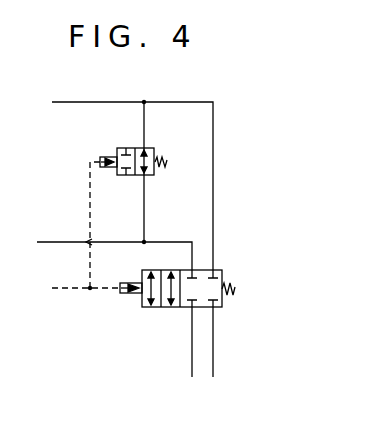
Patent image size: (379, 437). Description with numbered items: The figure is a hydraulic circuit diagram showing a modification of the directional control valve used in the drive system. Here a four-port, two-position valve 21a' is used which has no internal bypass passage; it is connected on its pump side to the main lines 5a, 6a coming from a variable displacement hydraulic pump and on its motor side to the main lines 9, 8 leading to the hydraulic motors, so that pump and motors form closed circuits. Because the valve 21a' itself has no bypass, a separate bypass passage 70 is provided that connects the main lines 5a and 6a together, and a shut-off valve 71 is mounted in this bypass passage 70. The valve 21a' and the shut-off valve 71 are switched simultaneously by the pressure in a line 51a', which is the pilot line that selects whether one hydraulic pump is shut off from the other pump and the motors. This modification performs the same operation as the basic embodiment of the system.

The main line 5a is at (98, 102).
The main line 6a is at (57, 241).
The bypass passage 70 is at (147, 127).
The shut-off valve 71 is at (148, 175).
The line 51a' is at (81, 245).
The four-port, two-position valve 21a' is at (204, 274).
The main line 9 is at (190, 350).
The main line 8 is at (214, 342).